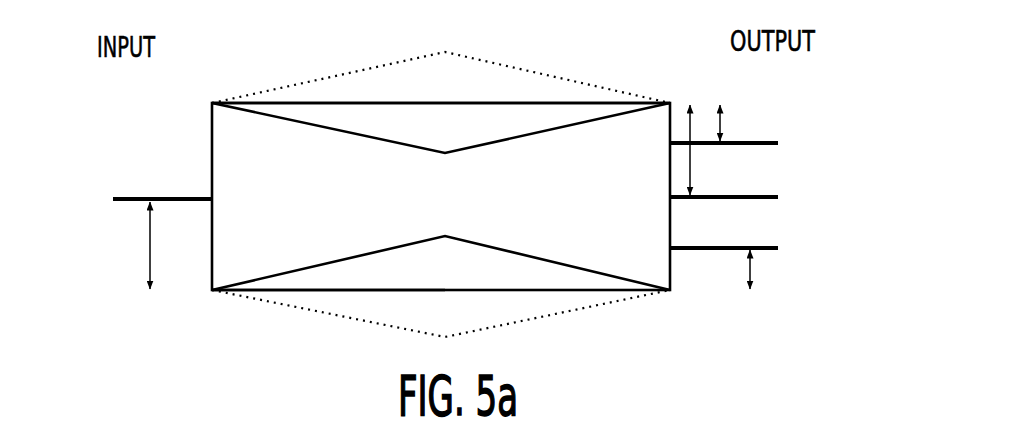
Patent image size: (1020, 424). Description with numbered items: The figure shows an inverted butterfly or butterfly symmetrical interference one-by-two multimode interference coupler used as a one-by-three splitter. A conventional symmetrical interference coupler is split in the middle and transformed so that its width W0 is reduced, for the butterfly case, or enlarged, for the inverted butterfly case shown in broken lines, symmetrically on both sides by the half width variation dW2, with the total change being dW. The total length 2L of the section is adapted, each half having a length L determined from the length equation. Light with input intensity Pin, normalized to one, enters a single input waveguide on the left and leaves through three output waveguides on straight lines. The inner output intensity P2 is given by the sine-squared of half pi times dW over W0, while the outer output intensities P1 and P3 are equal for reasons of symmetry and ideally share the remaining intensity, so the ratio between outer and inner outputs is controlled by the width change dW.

The width of the MMI section W0 is at (225, 105).
The half width variation dW/2 dW2 is at (445, 335).
The input intensity Pin is at (100, 199).
The first outer output intensity P1 is at (873, 143).
The inner output intensity P2 is at (860, 197).
The second outer output intensity P3 is at (877, 248).
The total MMI coupler length 2L is at (670, 41).
The half MMI section length L is at (445, 347).